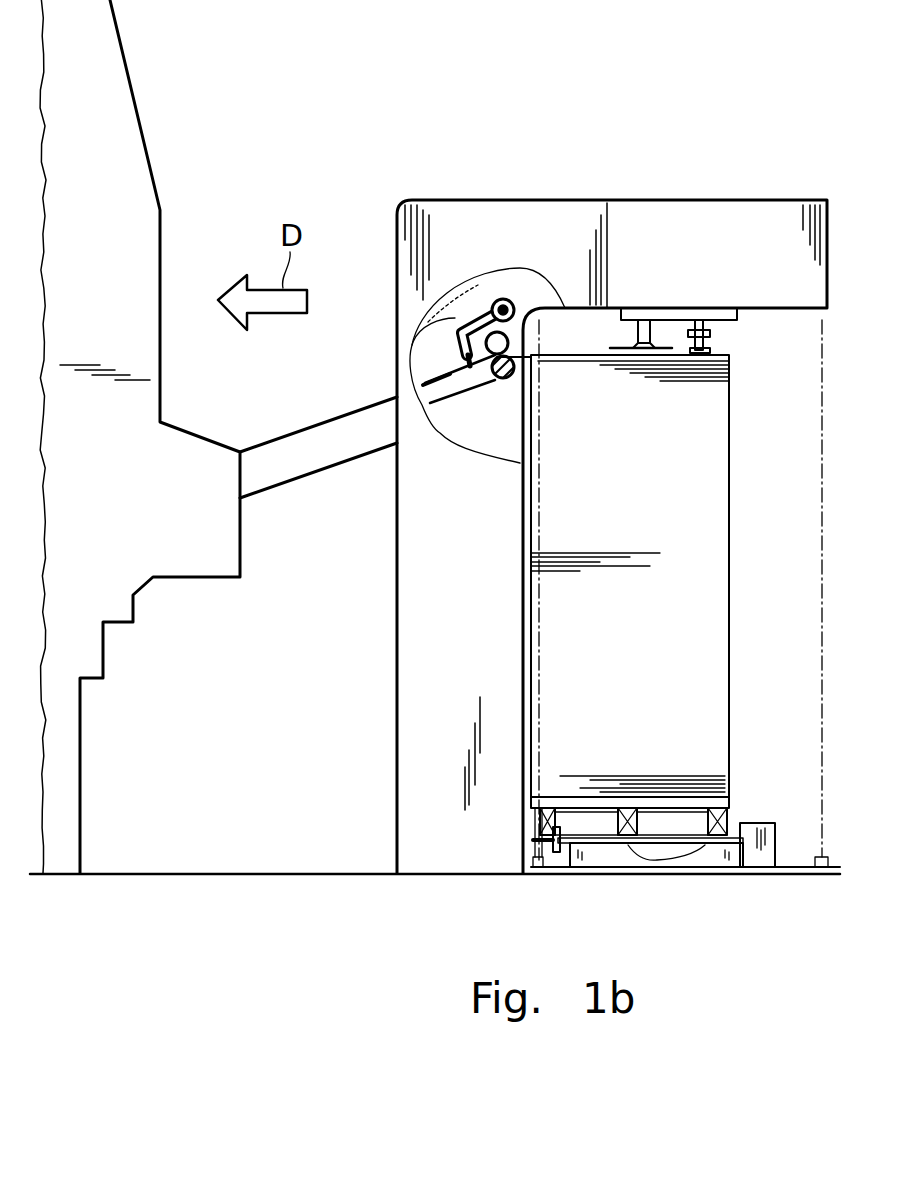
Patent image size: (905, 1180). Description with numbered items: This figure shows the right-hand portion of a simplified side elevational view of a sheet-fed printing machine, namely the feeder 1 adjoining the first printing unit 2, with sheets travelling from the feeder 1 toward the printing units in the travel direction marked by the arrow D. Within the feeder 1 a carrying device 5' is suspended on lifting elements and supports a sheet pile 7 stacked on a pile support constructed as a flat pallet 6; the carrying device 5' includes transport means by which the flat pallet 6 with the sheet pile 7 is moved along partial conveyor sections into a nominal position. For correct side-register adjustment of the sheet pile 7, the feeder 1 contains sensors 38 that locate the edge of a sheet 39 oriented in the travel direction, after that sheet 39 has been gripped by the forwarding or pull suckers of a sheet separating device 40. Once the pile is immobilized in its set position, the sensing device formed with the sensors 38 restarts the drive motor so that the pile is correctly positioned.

The feeder 1 is at (516, 172).
The first printing unit 2 is at (125, 123).
The carrying device 5' is at (766, 774).
The flat pallet 6 is at (600, 819).
The sheet pile 7 is at (712, 487).
The sensors 38 is at (412, 345).
The sheet 39 is at (606, 350).
The sheet separating device 40 is at (732, 335).